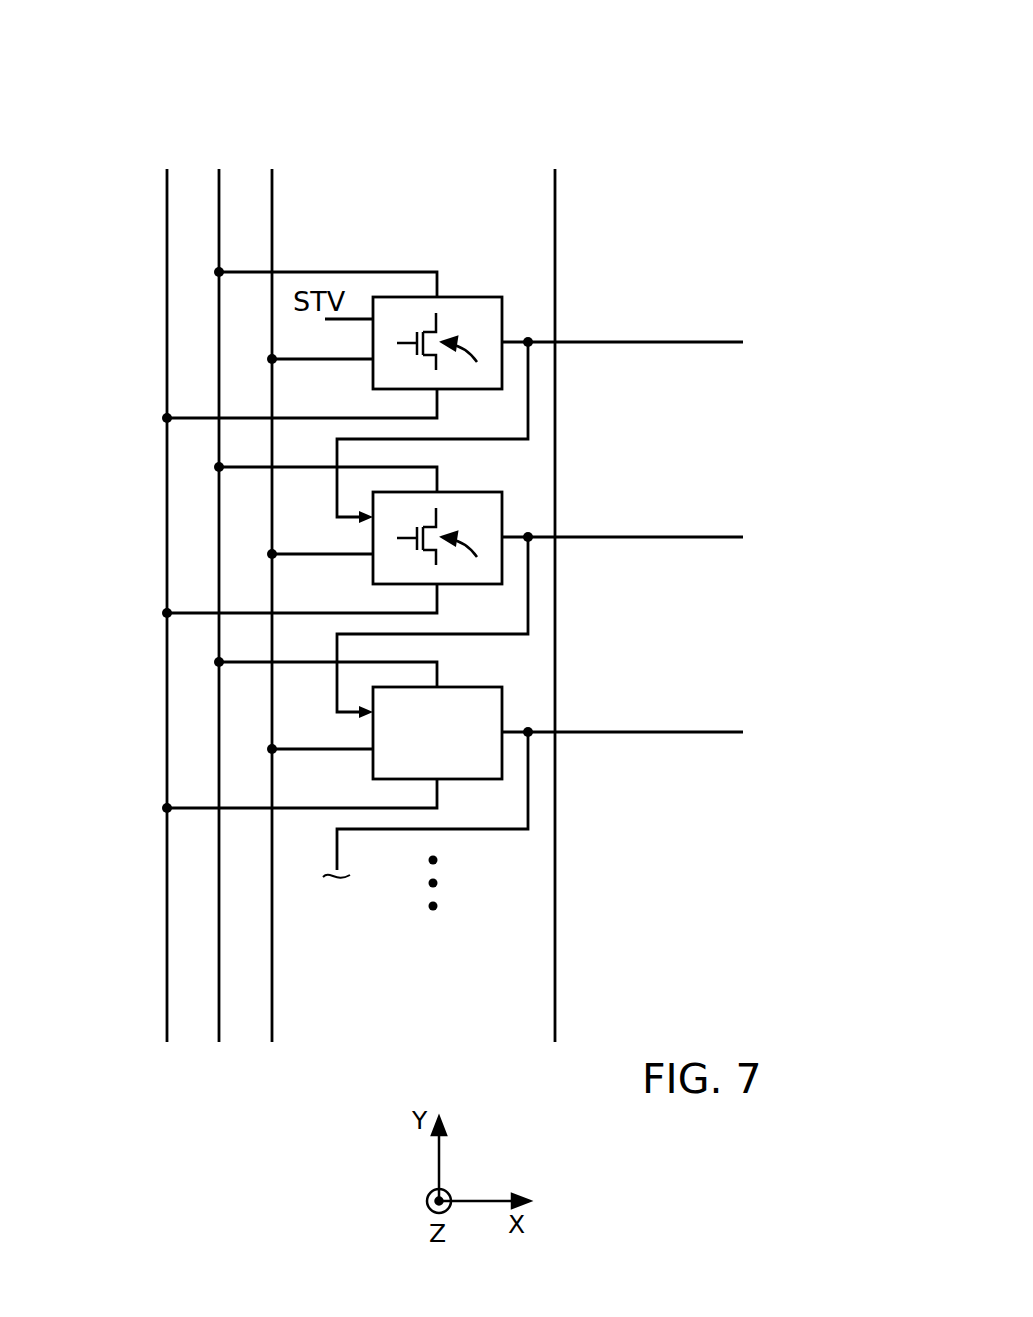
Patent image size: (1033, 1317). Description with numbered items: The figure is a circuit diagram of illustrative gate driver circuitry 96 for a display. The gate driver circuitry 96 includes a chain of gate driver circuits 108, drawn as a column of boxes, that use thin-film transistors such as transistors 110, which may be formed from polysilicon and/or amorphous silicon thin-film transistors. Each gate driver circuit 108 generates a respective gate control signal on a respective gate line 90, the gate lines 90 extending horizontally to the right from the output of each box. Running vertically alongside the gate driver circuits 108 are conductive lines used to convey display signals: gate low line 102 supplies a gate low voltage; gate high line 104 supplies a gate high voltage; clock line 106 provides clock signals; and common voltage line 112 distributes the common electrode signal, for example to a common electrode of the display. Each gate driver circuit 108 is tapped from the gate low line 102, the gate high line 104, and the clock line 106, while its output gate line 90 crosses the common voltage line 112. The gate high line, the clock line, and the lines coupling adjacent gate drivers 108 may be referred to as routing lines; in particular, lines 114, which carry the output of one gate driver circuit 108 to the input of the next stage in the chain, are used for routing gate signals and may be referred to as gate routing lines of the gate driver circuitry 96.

The gate driver circuitry 96 is at (620, 64).
The VGL line 102 is at (167, 228).
The VGH line 104 is at (219, 245).
The clock line 106 is at (272, 215).
The gate driver circuit 108 is at (470, 297).
The transistor 110 is at (452, 450).
The line 112 is at (555, 215).
The line 114 is at (452, 439).
The gate line 90 is at (605, 342).